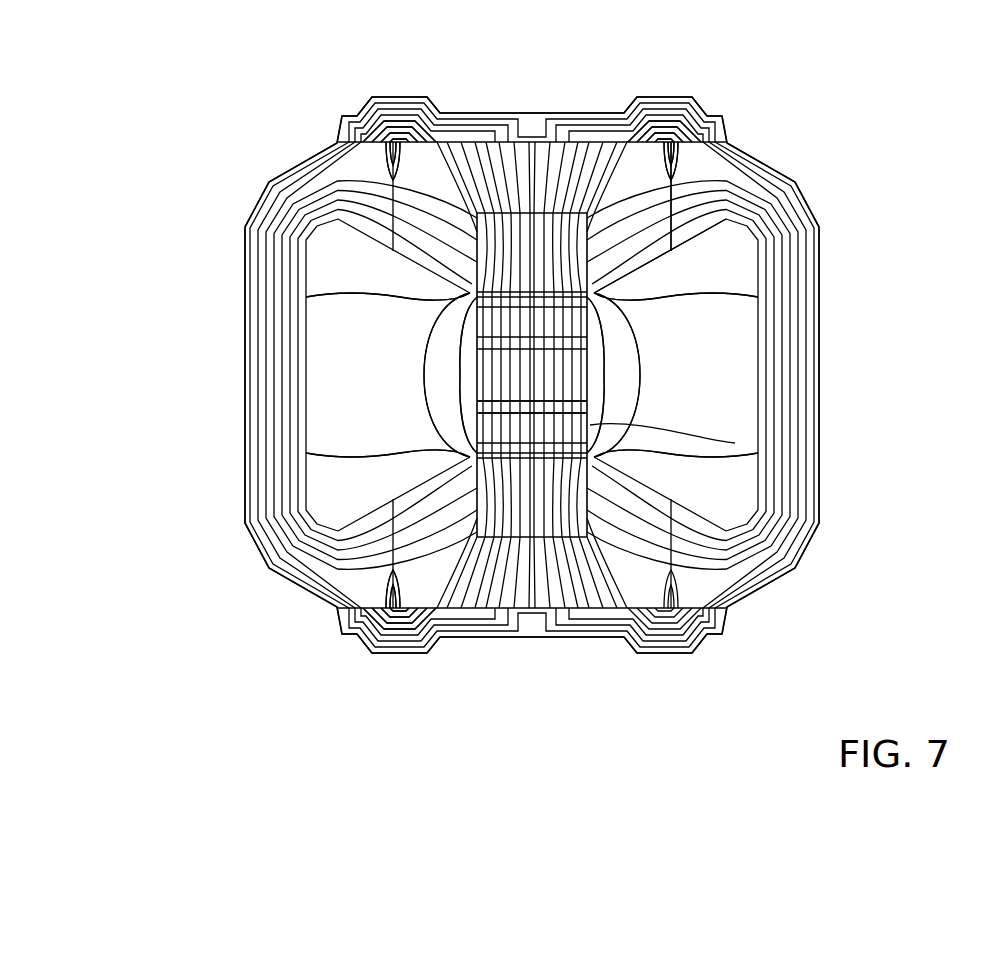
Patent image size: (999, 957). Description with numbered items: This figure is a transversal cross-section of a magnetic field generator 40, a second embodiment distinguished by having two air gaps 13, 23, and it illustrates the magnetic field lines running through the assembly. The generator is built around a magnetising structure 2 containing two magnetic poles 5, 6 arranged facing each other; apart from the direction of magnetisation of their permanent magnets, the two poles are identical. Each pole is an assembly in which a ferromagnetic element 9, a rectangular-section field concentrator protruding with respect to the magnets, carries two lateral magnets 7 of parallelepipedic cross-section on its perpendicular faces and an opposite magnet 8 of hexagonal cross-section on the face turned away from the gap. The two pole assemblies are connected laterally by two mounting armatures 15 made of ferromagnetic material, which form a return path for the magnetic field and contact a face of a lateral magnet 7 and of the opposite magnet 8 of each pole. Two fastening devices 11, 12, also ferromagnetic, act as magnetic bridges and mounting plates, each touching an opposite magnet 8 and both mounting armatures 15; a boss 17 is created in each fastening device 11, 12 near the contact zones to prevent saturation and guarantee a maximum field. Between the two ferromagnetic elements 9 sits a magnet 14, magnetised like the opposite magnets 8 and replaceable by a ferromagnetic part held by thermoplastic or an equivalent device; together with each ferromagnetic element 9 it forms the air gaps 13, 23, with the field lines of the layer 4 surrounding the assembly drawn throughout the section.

The magnetising structure 2 is at (226, 392).
The center leg 4 is at (508, 320).
The first magnetic pole 5 is at (356, 164).
The second magnetic pole 6 is at (362, 543).
The lateral magnet 7 is at (410, 215).
The opposite magnet 8 is at (648, 165).
The ferromagnetic element 9 is at (481, 138).
The fastening device 11 is at (564, 132).
The fastening device 12 is at (583, 626).
The air gap 13 is at (640, 290).
The magnet 14 is at (563, 370).
The mounting armature 15 is at (266, 240).
The boss 17 is at (391, 126).
The air gap 23 is at (604, 428).
The magnetic field generator 40 is at (914, 127).